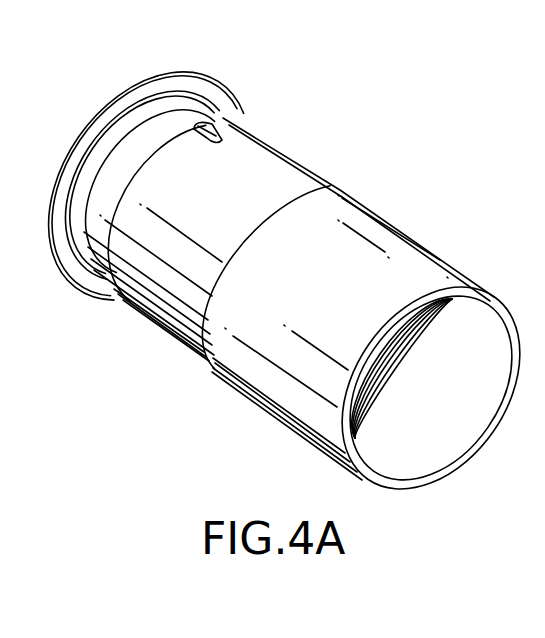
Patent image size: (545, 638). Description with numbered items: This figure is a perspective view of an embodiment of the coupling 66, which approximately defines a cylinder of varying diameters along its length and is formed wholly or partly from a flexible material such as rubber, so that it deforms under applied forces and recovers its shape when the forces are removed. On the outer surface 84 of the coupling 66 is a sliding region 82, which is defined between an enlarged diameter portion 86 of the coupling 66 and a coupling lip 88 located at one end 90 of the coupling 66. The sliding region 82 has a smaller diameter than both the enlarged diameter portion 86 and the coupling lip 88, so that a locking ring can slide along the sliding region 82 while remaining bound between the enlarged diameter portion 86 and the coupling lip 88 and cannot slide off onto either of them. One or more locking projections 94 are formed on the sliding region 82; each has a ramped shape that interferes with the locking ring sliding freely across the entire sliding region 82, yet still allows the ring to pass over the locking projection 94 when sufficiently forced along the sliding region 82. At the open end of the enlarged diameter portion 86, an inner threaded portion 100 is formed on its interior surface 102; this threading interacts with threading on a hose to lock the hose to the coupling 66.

The coupling 66 is at (391, 131).
The sliding region 82 is at (268, 148).
The outer surface 84 is at (225, 200).
The enlarged diameter portion 86 is at (391, 223).
The coupling lip 88 is at (208, 85).
The end 90 is at (112, 102).
The locking projection 94 is at (224, 121).
The inner threaded portion 100 is at (413, 419).
The interior surface 102 is at (494, 407).